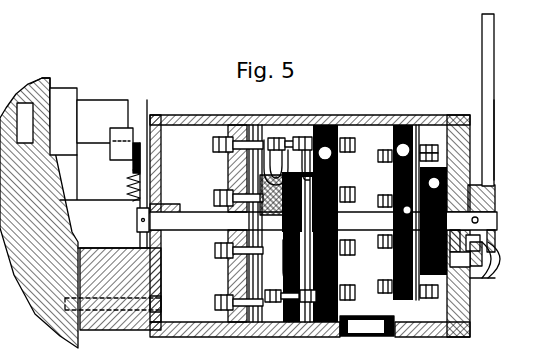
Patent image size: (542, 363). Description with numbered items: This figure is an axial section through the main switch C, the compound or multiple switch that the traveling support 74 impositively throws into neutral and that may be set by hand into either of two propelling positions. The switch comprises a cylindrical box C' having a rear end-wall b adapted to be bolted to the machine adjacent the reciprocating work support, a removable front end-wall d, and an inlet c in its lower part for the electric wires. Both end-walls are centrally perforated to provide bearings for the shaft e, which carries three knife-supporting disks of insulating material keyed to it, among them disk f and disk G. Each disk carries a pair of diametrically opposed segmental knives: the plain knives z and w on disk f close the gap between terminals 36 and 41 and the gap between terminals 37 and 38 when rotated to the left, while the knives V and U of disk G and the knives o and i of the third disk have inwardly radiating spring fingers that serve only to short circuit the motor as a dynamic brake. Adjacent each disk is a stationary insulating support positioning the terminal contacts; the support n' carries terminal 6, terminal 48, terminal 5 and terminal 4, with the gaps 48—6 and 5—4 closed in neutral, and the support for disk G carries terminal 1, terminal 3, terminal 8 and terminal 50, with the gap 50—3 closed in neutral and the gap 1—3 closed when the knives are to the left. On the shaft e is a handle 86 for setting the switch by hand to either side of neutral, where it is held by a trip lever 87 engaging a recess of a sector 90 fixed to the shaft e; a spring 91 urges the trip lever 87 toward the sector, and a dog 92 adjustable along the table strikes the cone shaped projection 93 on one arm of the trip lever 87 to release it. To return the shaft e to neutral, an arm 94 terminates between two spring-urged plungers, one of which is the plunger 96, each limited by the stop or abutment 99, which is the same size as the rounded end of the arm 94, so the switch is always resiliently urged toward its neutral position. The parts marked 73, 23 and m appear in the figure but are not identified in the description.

The support pillar 73 is at (35, 307).
The traveling support 74 is at (43, 82).
The dog 92 is at (98, 105).
The cone shaped projection 93 is at (133, 127).
The trip lever 87 is at (161, 156).
The sector 90 is at (161, 178).
The spring 91 is at (127, 183).
The cylindrical box C' is at (322, 212).
The inlet c is at (379, 333).
The main switch C is at (479, 100).
The handle 86 is at (494, 130).
The shaft e is at (500, 219).
The knife o is at (230, 165).
The stationary insulating support n' is at (228, 141).
The terminal 48 is at (233, 191).
The terminal 5 is at (216, 249).
The bolt 23 is at (305, 306).
The knife i is at (248, 275).
The terminal 6 is at (282, 157).
The block m is at (273, 195).
The knife V is at (305, 161).
The terminal 4 is at (262, 280).
The knife U is at (310, 284).
The disk G is at (325, 153).
The terminal 3 is at (355, 140).
The terminal 50 is at (352, 196).
The terminal 41 is at (377, 181).
The terminal 1 is at (351, 253).
The terminal 38 is at (382, 264).
The terminal 8 is at (351, 291).
The disk f is at (418, 178).
The terminal 36 is at (429, 143).
The knife z is at (424, 171).
The knife w is at (426, 289).
The terminal 37 is at (431, 303).
The plunger 96 is at (498, 246).
The arm 94 is at (486, 280).
The stop or abutment 99 is at (477, 282).
The front end-wall d is at (470, 324).
The rear end-wall b is at (177, 257).